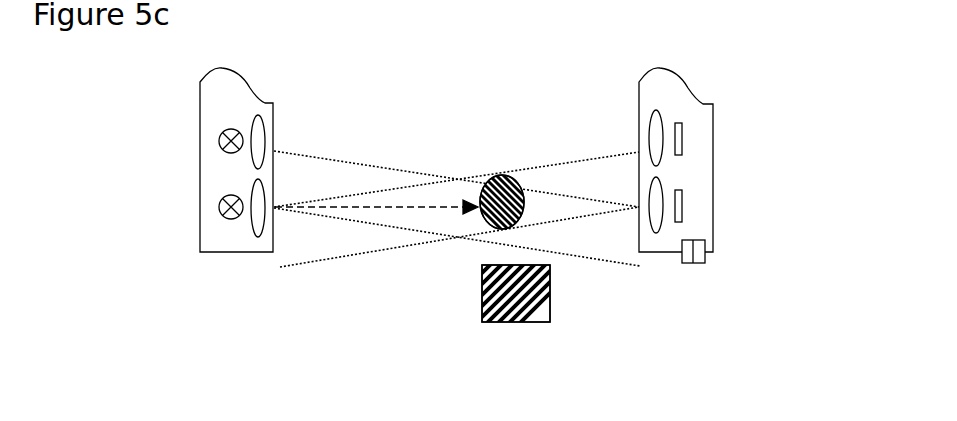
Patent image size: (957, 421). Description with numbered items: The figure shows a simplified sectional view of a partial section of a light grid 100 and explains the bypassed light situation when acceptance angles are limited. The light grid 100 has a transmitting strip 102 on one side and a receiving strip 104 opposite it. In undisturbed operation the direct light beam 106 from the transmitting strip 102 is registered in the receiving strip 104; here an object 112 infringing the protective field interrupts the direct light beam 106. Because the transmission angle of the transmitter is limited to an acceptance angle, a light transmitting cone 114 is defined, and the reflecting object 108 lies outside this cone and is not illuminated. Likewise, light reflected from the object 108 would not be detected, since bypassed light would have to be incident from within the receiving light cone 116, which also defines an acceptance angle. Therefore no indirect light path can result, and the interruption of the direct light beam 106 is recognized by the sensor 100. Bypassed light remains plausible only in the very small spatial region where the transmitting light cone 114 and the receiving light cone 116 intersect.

The light grid 100 is at (402, 95).
The transmitting strip 102 is at (200, 136).
The receiving strip 104 is at (713, 147).
The direct light beam 106 is at (417, 207).
The reflecting object 108 is at (483, 308).
The object 112 is at (497, 183).
The light transmitting cone 114 is at (587, 258).
The receiving light cone 116 is at (360, 253).